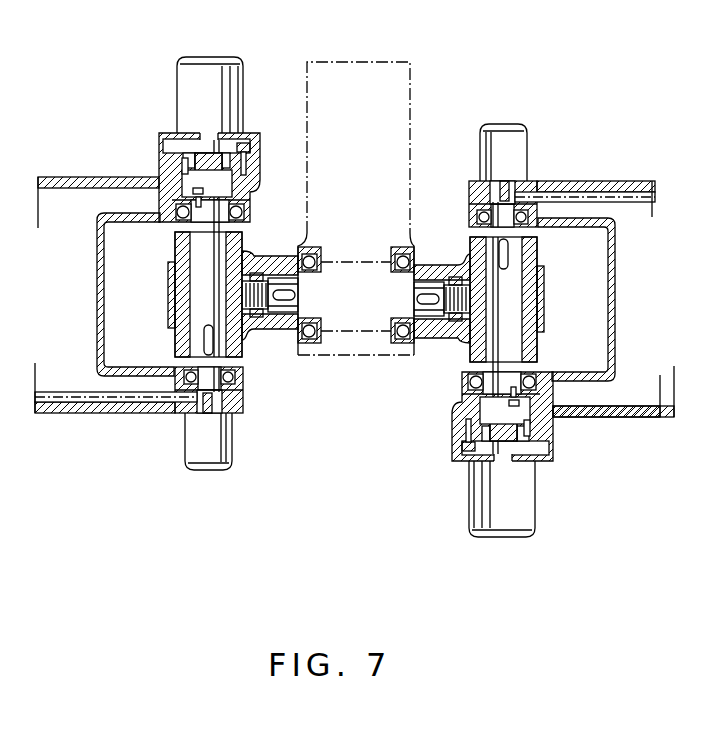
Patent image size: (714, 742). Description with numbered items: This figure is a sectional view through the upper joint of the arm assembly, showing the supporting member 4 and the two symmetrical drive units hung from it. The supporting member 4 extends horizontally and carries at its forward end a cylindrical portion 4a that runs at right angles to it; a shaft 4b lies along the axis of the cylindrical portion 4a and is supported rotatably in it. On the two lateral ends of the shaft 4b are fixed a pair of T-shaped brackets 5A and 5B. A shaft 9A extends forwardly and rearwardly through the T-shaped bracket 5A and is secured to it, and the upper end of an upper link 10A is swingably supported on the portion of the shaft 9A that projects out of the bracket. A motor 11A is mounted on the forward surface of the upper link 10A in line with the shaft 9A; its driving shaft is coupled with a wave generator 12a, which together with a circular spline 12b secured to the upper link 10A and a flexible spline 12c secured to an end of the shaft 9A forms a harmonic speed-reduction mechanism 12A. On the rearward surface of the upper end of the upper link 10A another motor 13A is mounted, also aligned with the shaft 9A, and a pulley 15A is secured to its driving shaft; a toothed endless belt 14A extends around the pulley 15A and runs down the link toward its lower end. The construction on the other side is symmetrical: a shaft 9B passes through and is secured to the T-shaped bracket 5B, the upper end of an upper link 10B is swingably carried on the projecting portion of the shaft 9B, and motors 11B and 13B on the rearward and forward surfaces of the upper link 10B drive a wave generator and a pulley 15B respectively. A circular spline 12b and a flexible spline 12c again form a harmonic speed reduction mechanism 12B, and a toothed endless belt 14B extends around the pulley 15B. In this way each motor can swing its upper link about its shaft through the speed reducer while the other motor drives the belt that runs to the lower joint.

The supporting member 4 is at (360, 62).
The cylindrical portion 4a is at (362, 353).
The shaft 4b is at (345, 318).
The T-shaped bracket 5A is at (538, 345).
The T-shaped bracket 5B is at (177, 250).
The shaft 9A is at (520, 286).
The shaft 9B is at (200, 291).
The upper link 10A is at (648, 418).
The upper link 10B is at (65, 414).
The motor 11A is at (468, 498).
The motor 11B is at (212, 57).
The harmonic speed-reduction mechanism 12A is at (571, 422).
The harmonic speed reduction mechanism 12B is at (149, 147).
The wave generator 12a is at (212, 160).
The circular spline 12b is at (246, 158).
The flexible spline 12c is at (232, 184).
The motor 13A is at (507, 124).
The motor 13B is at (232, 457).
The toothed endless belt 14A is at (592, 197).
The toothed endless belt 14B is at (130, 400).
The pulley 15A is at (522, 195).
The pulley 15B is at (218, 398).